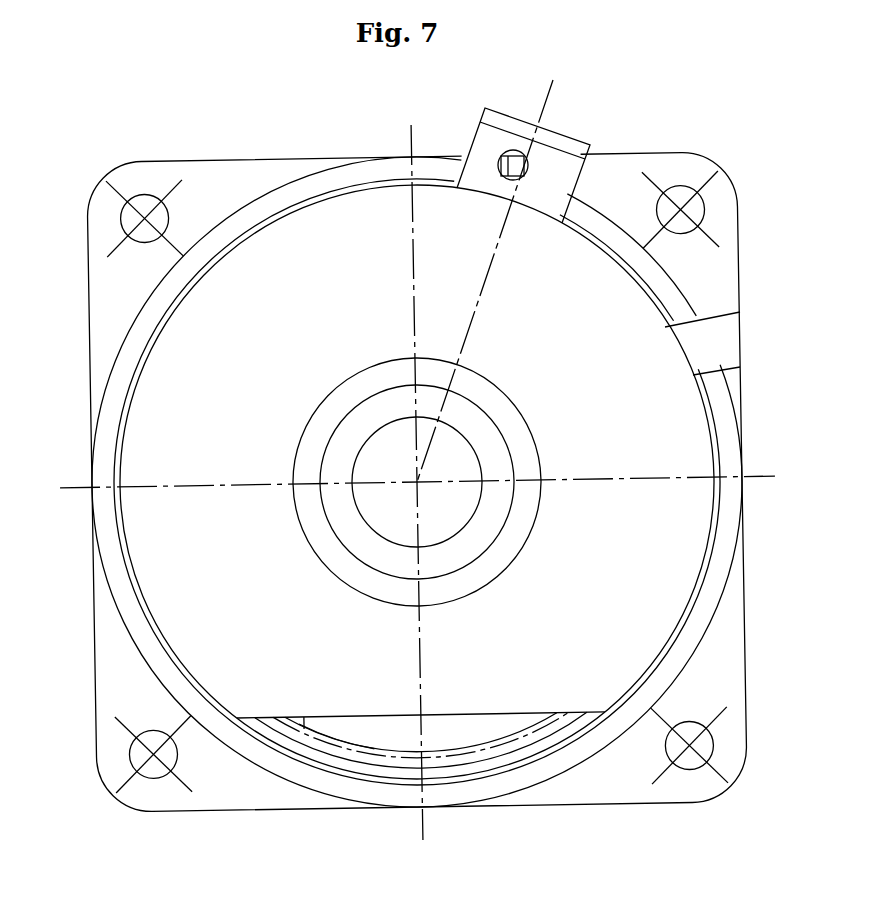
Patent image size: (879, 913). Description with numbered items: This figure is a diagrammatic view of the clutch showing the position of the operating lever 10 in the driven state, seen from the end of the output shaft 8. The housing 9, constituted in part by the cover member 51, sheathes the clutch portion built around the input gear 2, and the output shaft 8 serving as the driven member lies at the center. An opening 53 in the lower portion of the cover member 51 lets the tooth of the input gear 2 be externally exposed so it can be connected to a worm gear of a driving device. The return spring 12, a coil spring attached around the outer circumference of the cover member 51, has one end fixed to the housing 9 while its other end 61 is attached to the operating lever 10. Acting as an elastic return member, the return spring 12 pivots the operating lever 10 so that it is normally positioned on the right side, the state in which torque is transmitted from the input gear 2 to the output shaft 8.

The input gear 2 is at (392, 735).
The output shaft 8 is at (470, 442).
The housing 9 is at (200, 393).
The operating lever 10 is at (573, 138).
The return spring 12 is at (673, 283).
The cover member 51 is at (298, 200).
The opening 53 is at (345, 728).
The other end 61 is at (498, 160).